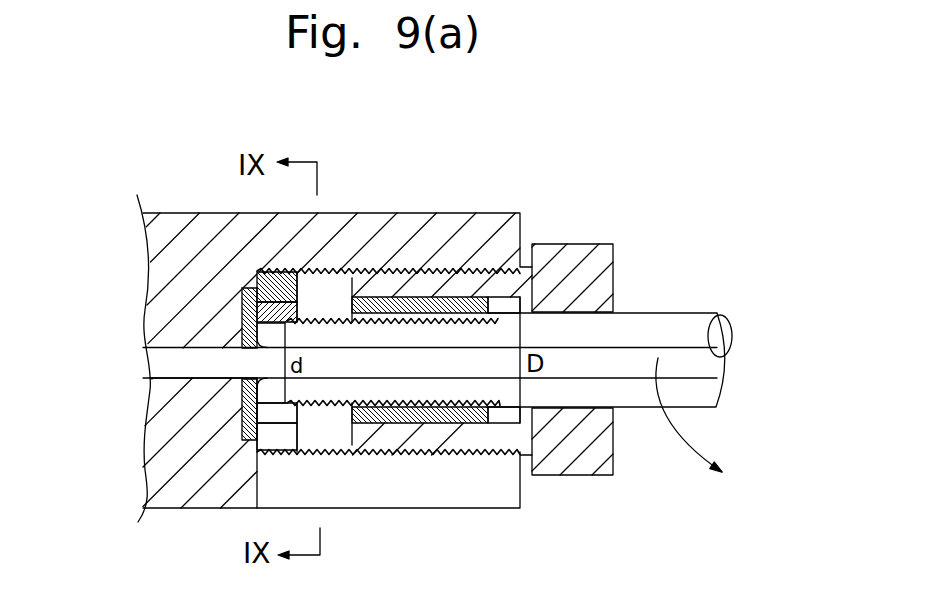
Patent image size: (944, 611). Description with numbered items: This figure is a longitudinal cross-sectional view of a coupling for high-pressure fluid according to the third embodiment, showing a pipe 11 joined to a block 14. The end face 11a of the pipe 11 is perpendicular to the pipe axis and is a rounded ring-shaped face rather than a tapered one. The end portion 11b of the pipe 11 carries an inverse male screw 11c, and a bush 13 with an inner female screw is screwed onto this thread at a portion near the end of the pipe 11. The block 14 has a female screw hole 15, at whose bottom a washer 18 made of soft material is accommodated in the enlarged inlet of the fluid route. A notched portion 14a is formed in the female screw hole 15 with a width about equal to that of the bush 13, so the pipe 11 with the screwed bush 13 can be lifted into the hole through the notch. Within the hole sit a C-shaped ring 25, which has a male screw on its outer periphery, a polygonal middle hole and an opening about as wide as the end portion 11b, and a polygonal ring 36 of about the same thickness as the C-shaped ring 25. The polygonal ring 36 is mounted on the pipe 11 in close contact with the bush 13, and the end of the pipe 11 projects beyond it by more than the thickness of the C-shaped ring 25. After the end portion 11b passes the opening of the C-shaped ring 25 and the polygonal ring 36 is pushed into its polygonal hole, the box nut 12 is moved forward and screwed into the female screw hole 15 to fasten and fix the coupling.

The pipe 11 is at (670, 325).
The end face of the pipe 11a is at (257, 349).
The end portion of the pipe 11b is at (285, 406).
The inverse male screw 11c is at (462, 405).
The box nut 12 is at (567, 260).
The bush 13 is at (468, 427).
The block 14 is at (210, 230).
The notched portion 14a is at (420, 467).
The female screw hole 15 is at (313, 277).
The washer 18 is at (240, 388).
The C-shaped ring 25 is at (280, 440).
The polygonal ring 36 is at (252, 287).